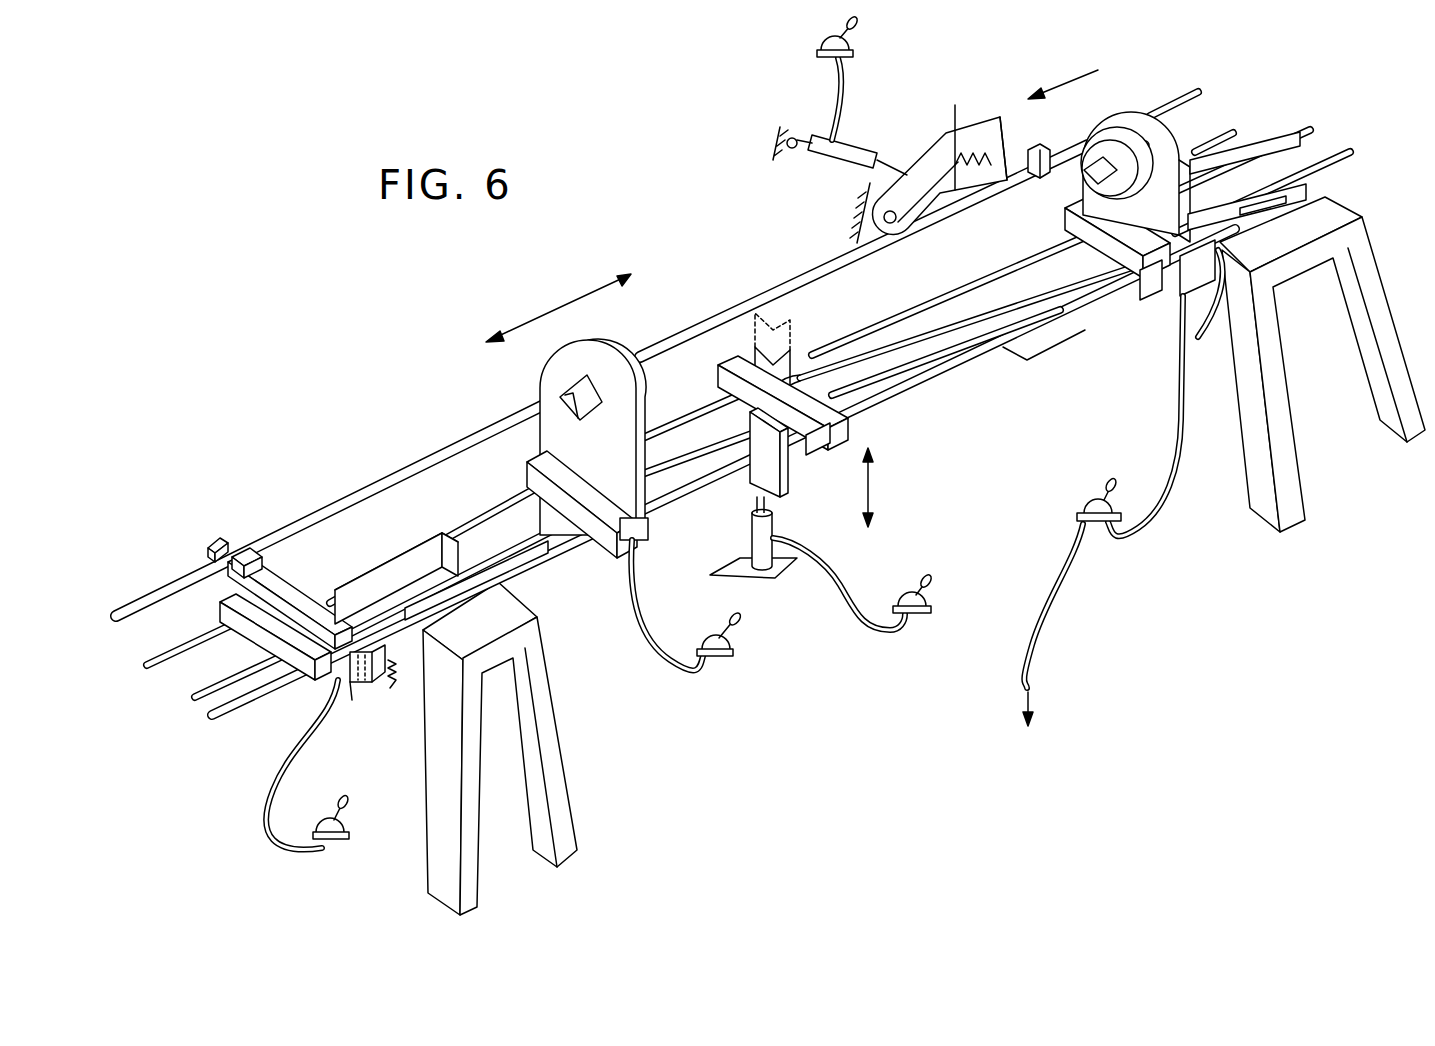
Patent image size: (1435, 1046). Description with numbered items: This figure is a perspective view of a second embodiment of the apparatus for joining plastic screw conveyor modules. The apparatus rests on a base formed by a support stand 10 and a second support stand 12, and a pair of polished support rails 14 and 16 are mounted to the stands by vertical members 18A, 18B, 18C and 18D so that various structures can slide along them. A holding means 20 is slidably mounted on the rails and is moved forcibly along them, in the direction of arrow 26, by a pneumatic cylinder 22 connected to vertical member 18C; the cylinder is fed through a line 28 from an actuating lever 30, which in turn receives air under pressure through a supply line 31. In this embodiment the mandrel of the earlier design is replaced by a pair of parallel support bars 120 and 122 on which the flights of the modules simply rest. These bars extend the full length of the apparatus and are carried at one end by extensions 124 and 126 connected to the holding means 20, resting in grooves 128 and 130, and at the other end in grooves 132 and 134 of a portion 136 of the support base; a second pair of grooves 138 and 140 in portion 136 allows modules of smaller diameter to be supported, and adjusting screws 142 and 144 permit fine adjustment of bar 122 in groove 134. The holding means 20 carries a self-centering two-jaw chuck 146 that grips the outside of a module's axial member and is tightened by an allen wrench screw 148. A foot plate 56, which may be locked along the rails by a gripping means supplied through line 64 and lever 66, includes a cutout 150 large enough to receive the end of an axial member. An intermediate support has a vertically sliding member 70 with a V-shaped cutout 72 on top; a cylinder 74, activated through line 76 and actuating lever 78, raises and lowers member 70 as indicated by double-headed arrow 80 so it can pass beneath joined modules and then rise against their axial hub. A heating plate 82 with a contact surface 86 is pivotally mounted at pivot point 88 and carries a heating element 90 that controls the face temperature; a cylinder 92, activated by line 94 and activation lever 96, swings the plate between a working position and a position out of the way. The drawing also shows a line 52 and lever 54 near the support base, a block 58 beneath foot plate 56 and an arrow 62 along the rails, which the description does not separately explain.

The support stand 10 is at (1268, 515).
The second support stand 12 is at (560, 807).
The support rail 14 is at (550, 530).
The support rail 16 is at (495, 508).
The vertical member 18A is at (477, 577).
The vertical member 18B is at (418, 557).
The vertical member 18C is at (1310, 190).
The vertical member 18D is at (1298, 142).
The holding means 20 is at (1200, 157).
The pneumatic cylinder 22 is at (1205, 330).
The arrow 26 is at (1068, 82).
The line 28 is at (1182, 430).
The actuating lever 30 is at (1085, 505).
The supply line 31 is at (1060, 592).
The cable 52 is at (274, 784).
The connector 54 is at (345, 827).
The foot plate 56 is at (561, 429).
The block 58 is at (649, 529).
The direction arrow 62 is at (568, 303).
The line 64 is at (668, 660).
The lever 66 is at (712, 640).
The vertically sliding member 70 is at (770, 478).
The V shaped cut out 72 is at (830, 374).
The cylinder 74 is at (770, 530).
The line 76 is at (866, 630).
The actuating lever 78 is at (913, 600).
The double headed arrow 80 is at (873, 490).
The heating plate 82 is at (1002, 120).
The second contact surface 86 is at (1007, 153).
The pivot point 88 is at (885, 215).
The heating element 90 is at (945, 160).
The cylinder 92 is at (858, 140).
The line 94 is at (837, 90).
The activation lever 96 is at (820, 48).
The support bar 120 is at (405, 462).
The support bar 122 is at (216, 708).
The extension 124 is at (1050, 183).
The extension 126 is at (1187, 280).
The groove 128 is at (1063, 145).
The groove 130 is at (1157, 255).
The groove 132 is at (238, 545).
The groove 134 is at (350, 682).
The portion of support base 136 is at (223, 578).
The groove 138 is at (268, 572).
The groove 140 is at (232, 672).
The adjusting screw 142 is at (362, 692).
The adjusting screw 144 is at (397, 690).
The self-centering two-jaw chuck 146 is at (1117, 150).
The allen wrench screw 148 is at (1167, 157).
The cutout 150 is at (578, 397).